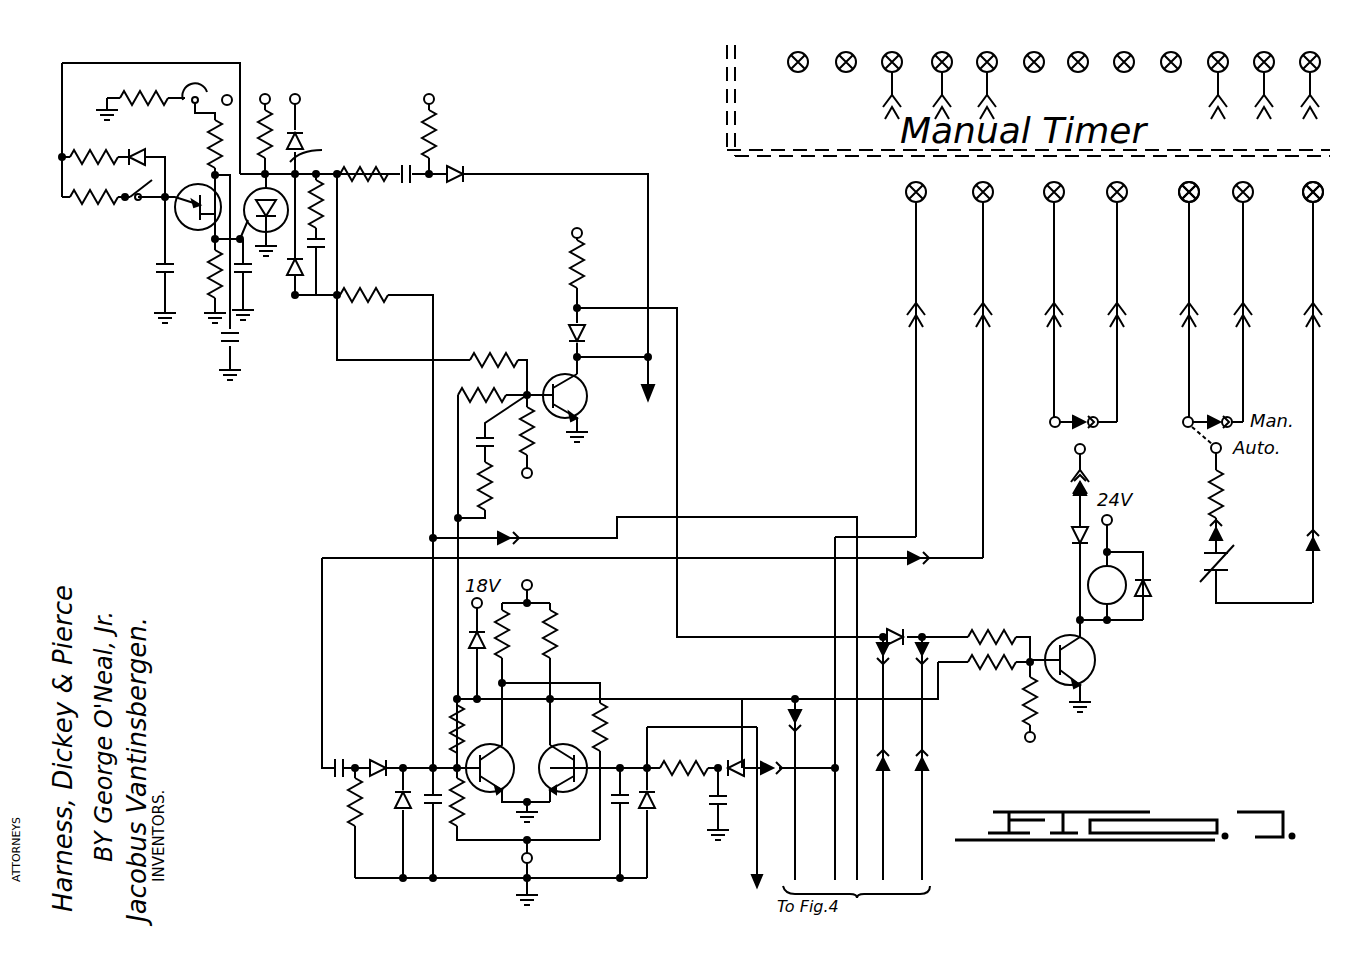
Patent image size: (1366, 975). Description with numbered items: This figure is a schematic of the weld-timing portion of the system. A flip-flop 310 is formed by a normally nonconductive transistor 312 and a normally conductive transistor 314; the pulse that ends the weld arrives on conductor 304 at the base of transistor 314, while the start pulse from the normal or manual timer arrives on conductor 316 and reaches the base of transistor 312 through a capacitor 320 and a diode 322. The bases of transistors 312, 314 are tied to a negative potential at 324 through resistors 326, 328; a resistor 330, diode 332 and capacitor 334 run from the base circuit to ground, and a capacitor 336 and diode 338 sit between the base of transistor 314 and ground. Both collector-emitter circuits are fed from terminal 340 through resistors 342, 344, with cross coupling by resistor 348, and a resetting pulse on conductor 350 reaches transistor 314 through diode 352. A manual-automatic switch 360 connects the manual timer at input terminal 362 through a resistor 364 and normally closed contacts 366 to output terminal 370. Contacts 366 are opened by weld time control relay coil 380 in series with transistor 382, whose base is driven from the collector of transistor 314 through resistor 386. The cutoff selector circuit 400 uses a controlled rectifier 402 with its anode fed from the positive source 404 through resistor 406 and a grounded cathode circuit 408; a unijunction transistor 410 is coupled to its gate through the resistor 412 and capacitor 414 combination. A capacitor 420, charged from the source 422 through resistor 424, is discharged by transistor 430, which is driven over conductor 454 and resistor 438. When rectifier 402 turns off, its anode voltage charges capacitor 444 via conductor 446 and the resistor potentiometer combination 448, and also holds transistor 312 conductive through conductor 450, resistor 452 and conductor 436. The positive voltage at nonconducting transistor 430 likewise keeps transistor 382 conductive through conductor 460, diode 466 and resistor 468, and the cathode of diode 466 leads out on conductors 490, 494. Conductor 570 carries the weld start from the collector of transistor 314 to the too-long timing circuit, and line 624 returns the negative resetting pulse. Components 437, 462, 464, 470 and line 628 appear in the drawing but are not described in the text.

The input conductor 304 is at (757, 855).
The flip-flop 310 is at (476, 730).
The normally nonconductive transistor 312 is at (470, 805).
The normally conductive transistor 314 is at (598, 742).
The input conductor 316 is at (935, 560).
The capacitor 320 is at (322, 750).
The diode 322 is at (378, 760).
The negative potential 324 is at (440, 812).
The resistor 326 is at (405, 815).
The resistor 328 is at (570, 793).
The resistor 330 is at (350, 800).
The diode 332 is at (398, 806).
The capacitor 334 is at (428, 812).
The capacitor 336 is at (620, 815).
The diode 338 is at (650, 815).
The terminal 340 is at (535, 596).
The resistor 342 is at (510, 630).
The resistor 344 is at (555, 640).
The resistor 348 is at (600, 702).
The input conductor 350 is at (916, 372).
The diode 352 is at (697, 686).
The manual-automatic switch 360 is at (1195, 450).
The input terminal 362 is at (1185, 200).
The resistor 364 is at (1218, 500).
The normally closed set of contacts 366 is at (1222, 565).
The output terminal 370 is at (1305, 200).
The weld time control relay coil 380 is at (1115, 600).
The transistor 382 is at (1088, 678).
The resistor 386 is at (985, 668).
The cutoff selector circuit 400 is at (137, 292).
The controlled rectifier 402 is at (290, 222).
The positive source of potential 404 is at (275, 98).
The resistor 406 is at (300, 135).
The grounded cathode circuit 408 is at (263, 255).
The unijunction transistor 410 is at (175, 212).
The resistor 412 is at (201, 281).
The capacitor 414 is at (240, 282).
The capacitor 420 is at (432, 165).
The source of potential 422 is at (436, 97).
The resistor 424 is at (420, 124).
The transistor 430 is at (590, 390).
The conductor 436 is at (433, 575).
The diode 437 is at (455, 172).
The resistor 438 is at (482, 392).
The capacitor 444 is at (152, 280).
The conductor 446 is at (55, 83).
The resistor potentiometer combination 448 is at (106, 217).
The conductor 450 is at (340, 250).
The resistor 452 is at (380, 290).
The conductor 454 is at (457, 595).
The conductor 460 is at (680, 320).
The 18V supply terminal 462 is at (572, 235).
The resistor 464 is at (575, 265).
The diode 466 is at (903, 630).
The resistor 468 is at (985, 635).
The resistor 470 is at (480, 365).
The conductor 490 is at (925, 775).
The conductor 494 is at (884, 868).
The conductor 570 is at (786, 805).
The line 624 is at (858, 800).
The line to Fig. 4 628 is at (783, 866).